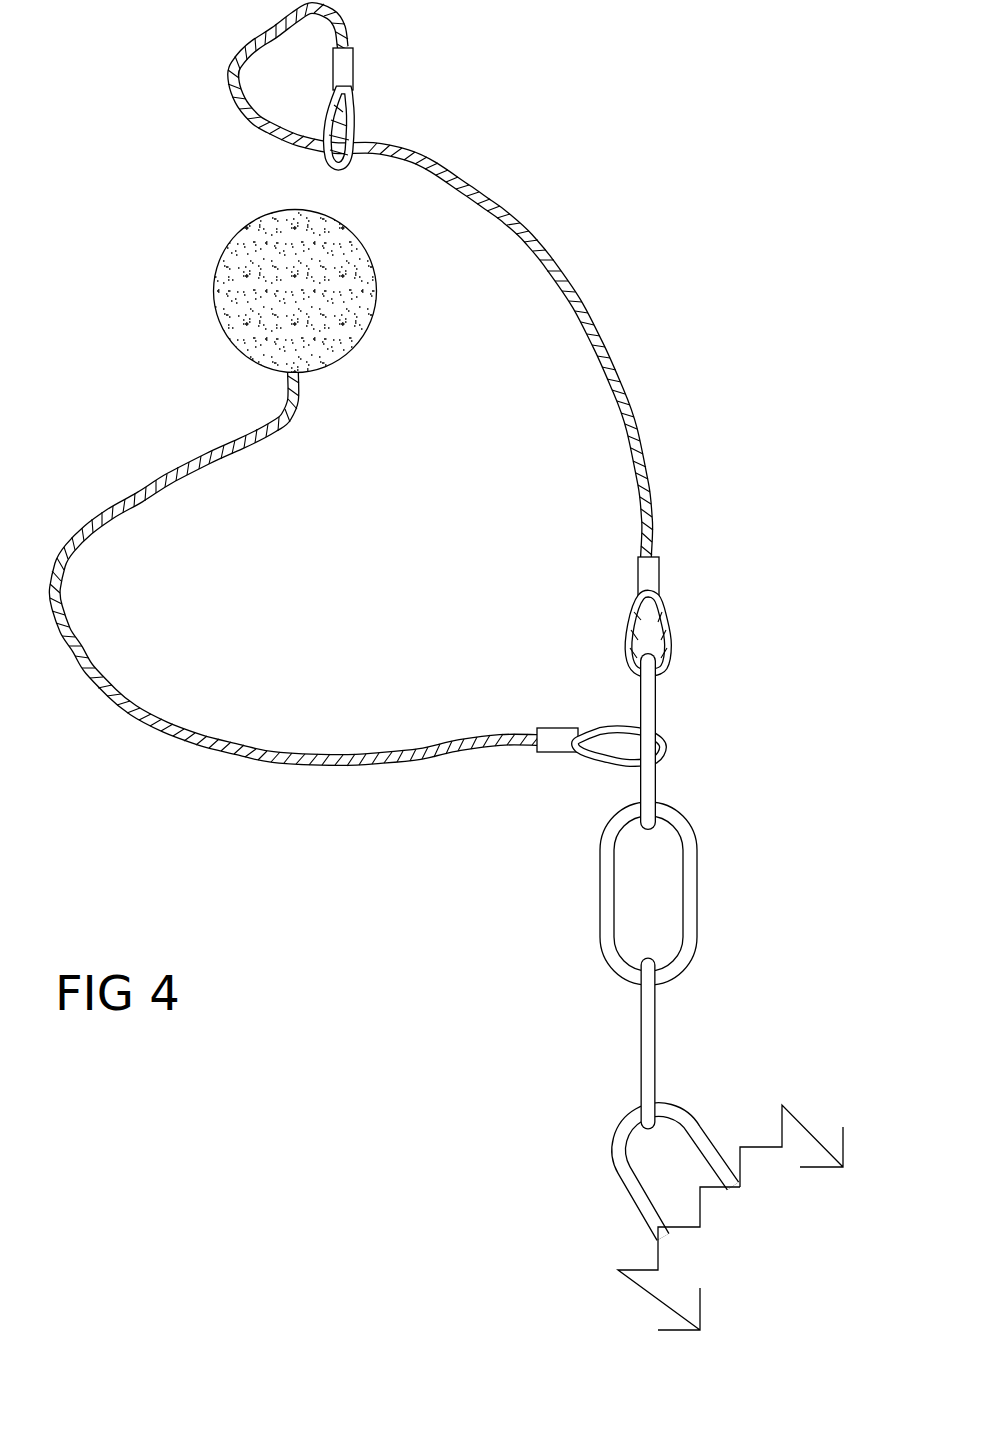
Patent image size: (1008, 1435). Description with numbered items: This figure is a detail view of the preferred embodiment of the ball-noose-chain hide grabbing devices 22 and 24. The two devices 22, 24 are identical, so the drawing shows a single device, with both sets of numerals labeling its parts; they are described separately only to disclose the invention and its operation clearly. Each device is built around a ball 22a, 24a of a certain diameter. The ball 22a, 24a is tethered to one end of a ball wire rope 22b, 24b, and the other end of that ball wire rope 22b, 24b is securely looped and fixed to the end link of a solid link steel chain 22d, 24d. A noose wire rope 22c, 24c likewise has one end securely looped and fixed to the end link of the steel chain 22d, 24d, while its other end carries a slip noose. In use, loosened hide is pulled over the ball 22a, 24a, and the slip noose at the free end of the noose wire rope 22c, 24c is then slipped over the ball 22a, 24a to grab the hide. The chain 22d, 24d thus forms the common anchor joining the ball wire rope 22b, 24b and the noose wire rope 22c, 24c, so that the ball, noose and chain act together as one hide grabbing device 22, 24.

The ball-noose-chain hide grabbing device 22 is at (475, 620).
The ball-noose-chain hide grabbing device 24 is at (648, 486).
The ball 22a is at (378, 309).
The ball 24a is at (318, 340).
The ball wire rope 22b is at (356, 569).
The ball wire rope 24b is at (167, 724).
The noose wire rope 22c is at (456, 338).
The noose wire rope 24c is at (500, 208).
The solid link steel chain 22d is at (750, 823).
The solid link steel chain 24d is at (688, 862).